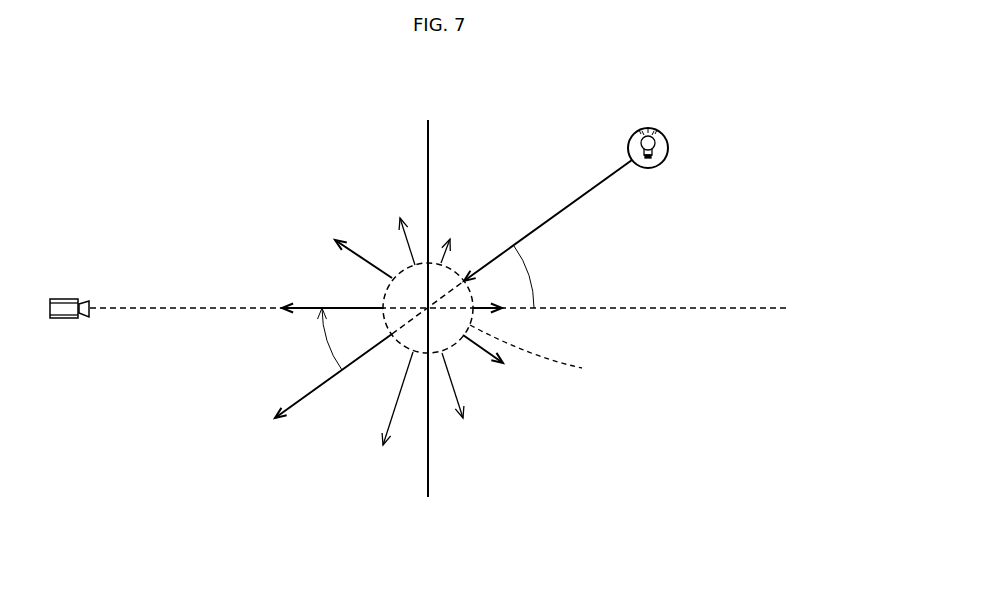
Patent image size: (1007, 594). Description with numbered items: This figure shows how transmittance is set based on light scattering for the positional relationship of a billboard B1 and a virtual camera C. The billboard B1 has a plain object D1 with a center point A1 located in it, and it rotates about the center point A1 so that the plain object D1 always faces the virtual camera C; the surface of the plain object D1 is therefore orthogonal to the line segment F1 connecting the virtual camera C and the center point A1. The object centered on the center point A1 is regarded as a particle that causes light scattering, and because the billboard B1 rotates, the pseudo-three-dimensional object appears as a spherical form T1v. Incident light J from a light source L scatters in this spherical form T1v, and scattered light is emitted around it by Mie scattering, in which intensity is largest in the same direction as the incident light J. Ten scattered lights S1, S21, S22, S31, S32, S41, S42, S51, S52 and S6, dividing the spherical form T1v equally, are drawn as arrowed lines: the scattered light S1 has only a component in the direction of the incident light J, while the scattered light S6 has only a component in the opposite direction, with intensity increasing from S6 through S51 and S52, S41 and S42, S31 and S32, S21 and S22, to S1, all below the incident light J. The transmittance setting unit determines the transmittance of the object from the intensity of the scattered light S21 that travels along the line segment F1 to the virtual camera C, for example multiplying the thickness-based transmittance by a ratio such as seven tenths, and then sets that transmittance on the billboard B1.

The plain object D1 is at (428, 162).
The light source L is at (668, 150).
The incident light J is at (582, 197).
The scattered light S41 is at (410, 240).
The scattered light S51 is at (460, 268).
The scattered light S31 is at (358, 250).
The scattered light S6 is at (463, 276).
The scattered light S21 is at (310, 305).
The center point A1 is at (430, 306).
The virtual camera C is at (62, 312).
The line segment F1 is at (154, 312).
The scattered light S52 is at (478, 313).
The spherical form T1v is at (547, 352).
The scattered light S42 is at (480, 355).
The scattered light S1 is at (292, 400).
The scattered light S32 is at (450, 398).
The scattered light S22 is at (387, 418).
The billboard B1 is at (418, 485).